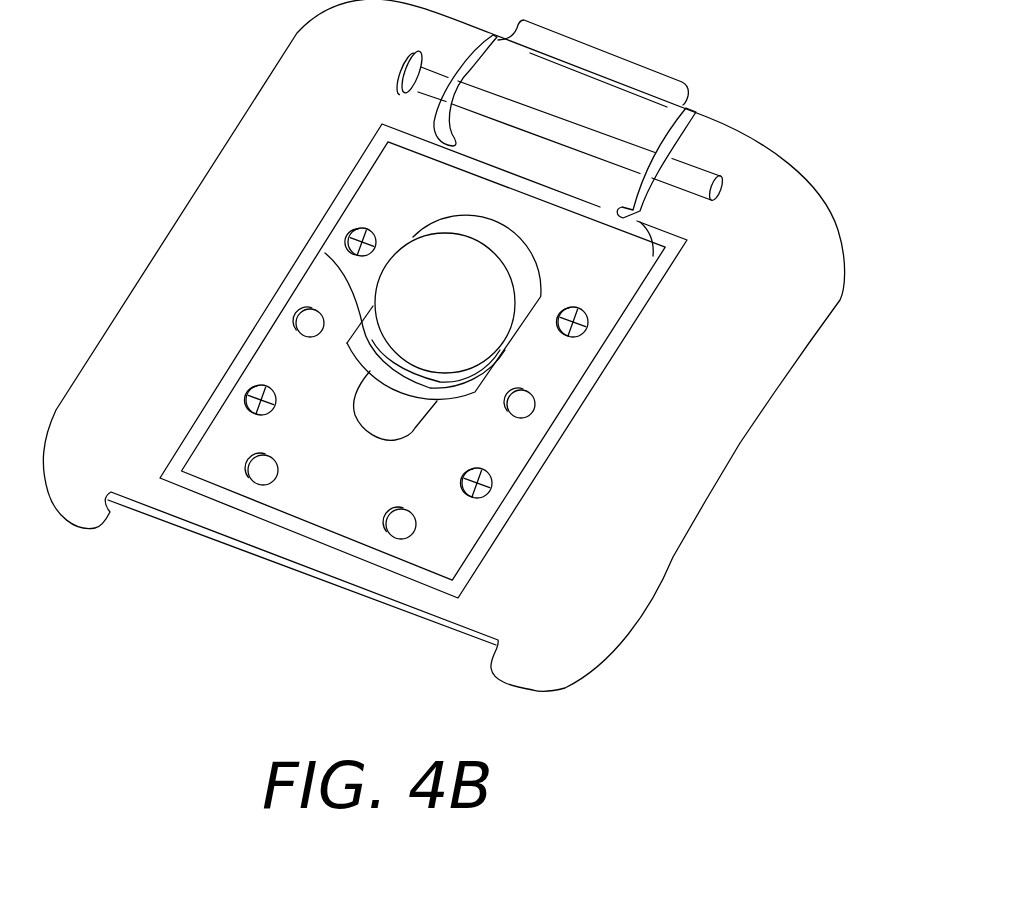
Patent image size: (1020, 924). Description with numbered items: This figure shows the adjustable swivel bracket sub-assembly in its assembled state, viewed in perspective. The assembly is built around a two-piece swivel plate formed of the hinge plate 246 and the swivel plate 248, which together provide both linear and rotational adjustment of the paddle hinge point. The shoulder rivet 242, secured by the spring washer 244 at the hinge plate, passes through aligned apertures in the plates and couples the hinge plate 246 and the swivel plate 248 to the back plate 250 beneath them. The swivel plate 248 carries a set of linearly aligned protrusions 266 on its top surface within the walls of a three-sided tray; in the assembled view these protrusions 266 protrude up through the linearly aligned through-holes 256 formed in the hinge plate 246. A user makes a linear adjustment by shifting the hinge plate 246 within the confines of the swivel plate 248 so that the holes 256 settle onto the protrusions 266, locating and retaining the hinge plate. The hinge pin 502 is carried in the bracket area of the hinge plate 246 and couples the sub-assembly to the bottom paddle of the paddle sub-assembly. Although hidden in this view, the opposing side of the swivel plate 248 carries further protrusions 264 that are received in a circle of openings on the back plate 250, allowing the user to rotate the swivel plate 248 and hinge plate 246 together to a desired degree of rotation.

The shoulder rivet 242 is at (427, 270).
The spring washer 244 is at (326, 253).
The hinge plate 246 is at (605, 50).
The swivel plate 248 is at (227, 477).
The back plate 250 is at (743, 156).
The through-holes 256 is at (350, 230).
The protrusions 264 is at (266, 487).
The linear protrusions 266 is at (363, 230).
The hinge pin 502 is at (695, 168).